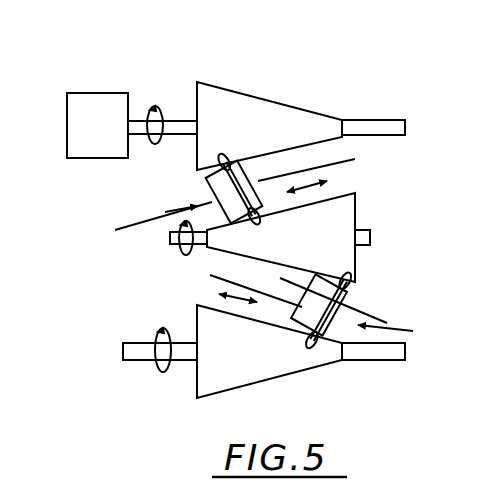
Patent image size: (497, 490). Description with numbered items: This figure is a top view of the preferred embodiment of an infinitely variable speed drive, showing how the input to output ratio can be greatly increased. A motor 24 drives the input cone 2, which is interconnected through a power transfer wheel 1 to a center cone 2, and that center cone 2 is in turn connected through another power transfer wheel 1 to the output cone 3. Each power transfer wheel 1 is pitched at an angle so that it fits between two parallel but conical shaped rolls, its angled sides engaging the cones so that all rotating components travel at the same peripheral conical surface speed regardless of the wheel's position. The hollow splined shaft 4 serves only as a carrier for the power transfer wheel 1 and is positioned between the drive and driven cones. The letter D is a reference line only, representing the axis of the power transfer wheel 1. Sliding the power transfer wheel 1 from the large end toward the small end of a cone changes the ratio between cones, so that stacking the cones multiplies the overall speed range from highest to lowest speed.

The power transfer wheel 1 is at (203, 188).
The input cone 2 is at (249, 109).
The output cone 3 is at (281, 367).
The hollow splined shaft 4 is at (338, 162).
The motor 24 is at (93, 92).
The axis of the power transfer wheel D is at (261, 273).